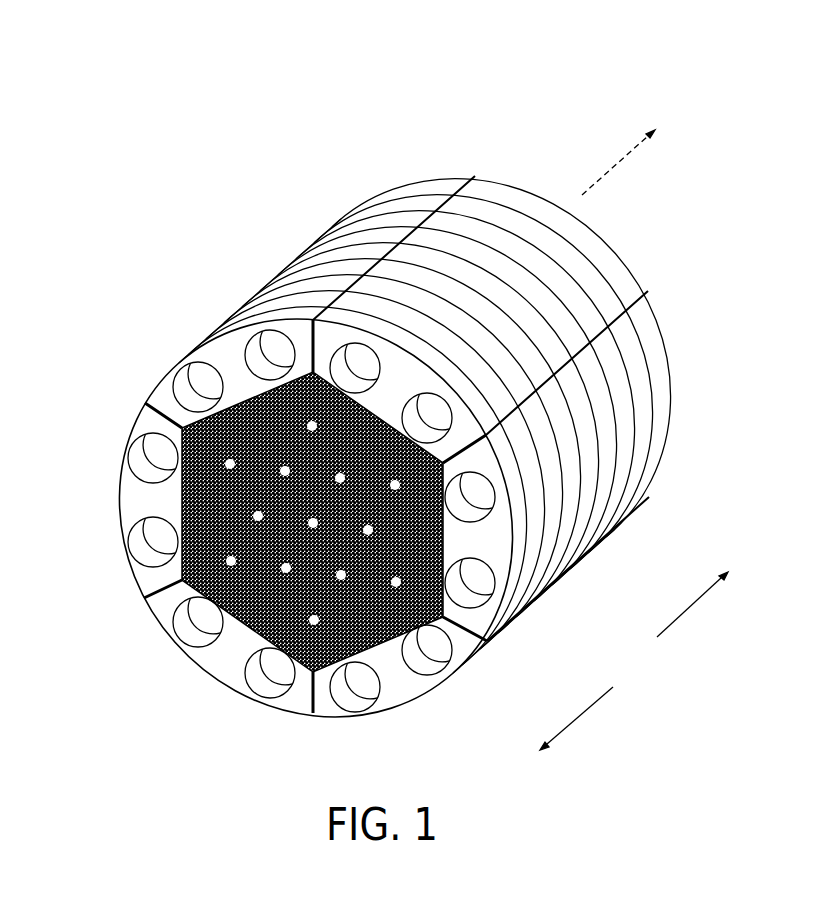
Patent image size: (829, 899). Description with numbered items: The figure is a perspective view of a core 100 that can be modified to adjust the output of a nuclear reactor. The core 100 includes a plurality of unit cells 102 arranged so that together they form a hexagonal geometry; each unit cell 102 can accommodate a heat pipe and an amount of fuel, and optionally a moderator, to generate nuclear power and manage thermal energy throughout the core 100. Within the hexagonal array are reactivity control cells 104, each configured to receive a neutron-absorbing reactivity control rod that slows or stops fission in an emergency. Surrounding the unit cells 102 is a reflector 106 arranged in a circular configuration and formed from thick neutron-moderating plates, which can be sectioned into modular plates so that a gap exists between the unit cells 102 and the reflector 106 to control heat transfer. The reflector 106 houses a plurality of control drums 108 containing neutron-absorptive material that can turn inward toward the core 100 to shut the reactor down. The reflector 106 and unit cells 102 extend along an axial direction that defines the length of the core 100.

The core 100 is at (443, 100).
The unit cell 102 is at (219, 617).
The reactivity control cell 104 is at (347, 580).
The reflector 106 is at (328, 260).
The control drum 108 is at (149, 448).